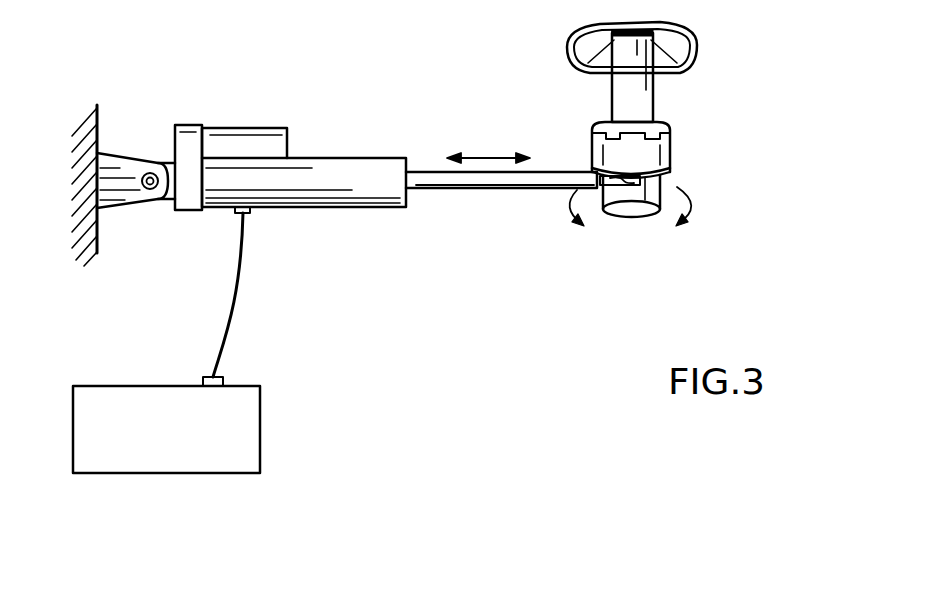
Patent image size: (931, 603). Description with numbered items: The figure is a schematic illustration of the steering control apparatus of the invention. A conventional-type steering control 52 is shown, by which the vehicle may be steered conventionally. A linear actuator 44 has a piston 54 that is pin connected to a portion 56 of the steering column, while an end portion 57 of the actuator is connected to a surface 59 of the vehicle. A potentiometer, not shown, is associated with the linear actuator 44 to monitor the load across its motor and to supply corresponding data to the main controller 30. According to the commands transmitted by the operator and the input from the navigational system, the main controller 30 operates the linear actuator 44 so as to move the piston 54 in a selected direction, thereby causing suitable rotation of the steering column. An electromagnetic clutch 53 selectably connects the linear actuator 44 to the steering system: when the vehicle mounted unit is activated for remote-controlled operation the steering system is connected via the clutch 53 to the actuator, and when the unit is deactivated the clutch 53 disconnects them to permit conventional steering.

The main controller 30 is at (262, 410).
The linear actuator 44 is at (333, 168).
The steering control 52 is at (697, 50).
The electromagnetic clutch 53 is at (670, 162).
The piston 54 is at (468, 193).
The portion of the steering column 56 is at (705, 203).
The end portion of the actuator 57 is at (139, 131).
The surface of the vehicle 59 is at (98, 222).